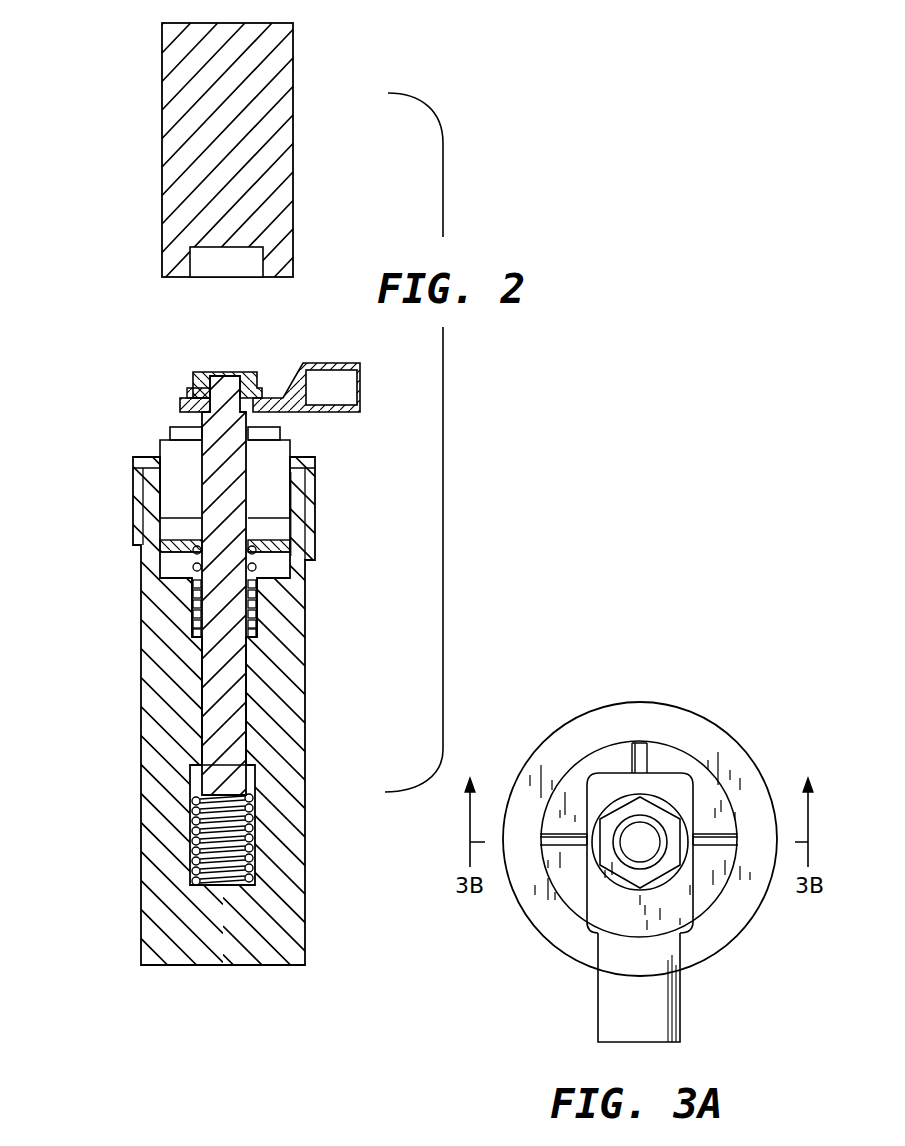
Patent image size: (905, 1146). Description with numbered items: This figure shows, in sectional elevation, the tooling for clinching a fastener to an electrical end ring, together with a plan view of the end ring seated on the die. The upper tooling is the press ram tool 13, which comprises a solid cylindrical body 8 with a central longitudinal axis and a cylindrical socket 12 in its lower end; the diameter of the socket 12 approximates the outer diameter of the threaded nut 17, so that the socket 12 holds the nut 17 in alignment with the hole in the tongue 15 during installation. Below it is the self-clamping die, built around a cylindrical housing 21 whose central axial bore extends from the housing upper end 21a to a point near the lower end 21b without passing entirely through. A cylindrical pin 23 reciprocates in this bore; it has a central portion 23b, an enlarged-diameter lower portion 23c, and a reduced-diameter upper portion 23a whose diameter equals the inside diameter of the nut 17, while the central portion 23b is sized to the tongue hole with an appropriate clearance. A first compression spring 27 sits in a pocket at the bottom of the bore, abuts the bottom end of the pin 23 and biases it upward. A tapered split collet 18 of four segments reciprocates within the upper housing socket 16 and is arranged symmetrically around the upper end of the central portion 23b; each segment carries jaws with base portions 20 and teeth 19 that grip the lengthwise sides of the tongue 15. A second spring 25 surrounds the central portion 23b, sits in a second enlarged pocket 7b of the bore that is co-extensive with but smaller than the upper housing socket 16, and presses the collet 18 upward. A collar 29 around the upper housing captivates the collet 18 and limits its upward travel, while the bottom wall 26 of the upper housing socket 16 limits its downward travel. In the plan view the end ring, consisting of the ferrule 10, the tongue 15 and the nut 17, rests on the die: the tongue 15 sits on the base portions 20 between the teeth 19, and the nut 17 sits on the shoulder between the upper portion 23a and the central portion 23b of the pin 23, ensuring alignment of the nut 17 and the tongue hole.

In FIG. 2, the solid cylindrical body 8 is at (293, 79).
In FIG. 3A, the ferrule 10 is at (670, 1002).
In FIG. 2, the cylindrical socket 12 is at (227, 267).
In FIG. 2, the press ram tool 13 is at (168, 95).
In FIG. 2, the tongue 15 is at (266, 398).
In FIG. 3A, the tongue 15 is at (640, 922).
In FIG. 2, the upper housing socket 16 is at (275, 565).
In FIG. 2, the threaded nut 17 is at (195, 386).
In FIG. 3A, the threaded nut 17 is at (627, 810).
In FIG. 2, the collet 18 is at (176, 473).
In FIG. 2, the teeth 19 is at (170, 432).
In FIG. 3A, the teeth 19 is at (547, 808).
In FIG. 2, the base portions 20 is at (300, 472).
In FIG. 3A, the base portions 20 is at (617, 757).
In FIG. 2, the cylindrical housing 21 is at (147, 728).
In FIG. 2, the housing upper end 21a is at (150, 478).
In FIG. 2, the housing lower end 21b is at (150, 965).
In FIG. 3A, the cylindrical pin 23 is at (638, 840).
In FIG. 2, the reduced-diameter upper portion 23a is at (200, 397).
In FIG. 2, the central portion 23b is at (236, 706).
In FIG. 2, the enlarged-diameter lower portion 23c is at (243, 780).
In FIG. 2, the second spring 25 is at (195, 616).
In FIG. 2, the bottom wall 26 is at (175, 553).
In FIG. 2, the first compression spring 27 is at (263, 905).
In FIG. 2, the collar 29 is at (312, 492).
In FIG. 2, the second enlarged pocket 7b is at (258, 610).